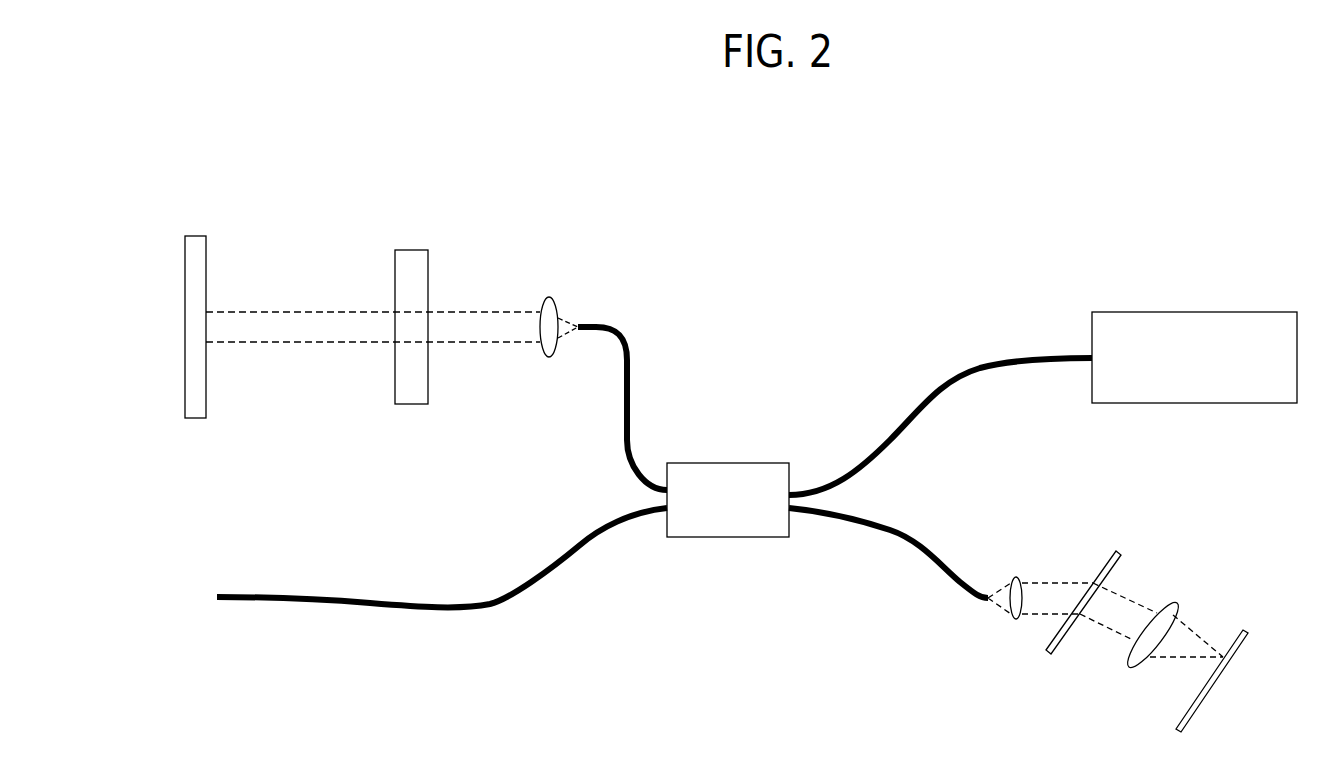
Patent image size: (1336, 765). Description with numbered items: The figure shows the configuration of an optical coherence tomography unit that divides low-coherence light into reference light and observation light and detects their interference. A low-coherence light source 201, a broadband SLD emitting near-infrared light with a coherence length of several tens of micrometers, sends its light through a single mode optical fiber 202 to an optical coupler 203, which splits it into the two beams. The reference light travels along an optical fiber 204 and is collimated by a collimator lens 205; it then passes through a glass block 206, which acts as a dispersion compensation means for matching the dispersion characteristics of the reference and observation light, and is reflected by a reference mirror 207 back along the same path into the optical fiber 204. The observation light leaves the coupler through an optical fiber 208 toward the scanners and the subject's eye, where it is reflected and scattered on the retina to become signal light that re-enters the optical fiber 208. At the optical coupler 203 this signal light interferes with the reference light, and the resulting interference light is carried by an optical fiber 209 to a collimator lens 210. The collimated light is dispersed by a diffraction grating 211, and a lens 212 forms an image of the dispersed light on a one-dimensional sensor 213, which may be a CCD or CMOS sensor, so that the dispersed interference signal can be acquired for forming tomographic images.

The low-coherence light source 201 is at (1197, 312).
The optical fiber 202 is at (980, 370).
The optical coupler 203 is at (731, 463).
The optical fiber 204 is at (632, 362).
The collimator lens 205 is at (548, 297).
The glass block 206 is at (408, 250).
The reference mirror 207 is at (192, 236).
The optical fiber 208 is at (374, 597).
The optical fiber 209 is at (858, 523).
The collimator lens 210 is at (1017, 623).
The scanning mirror 211 is at (1049, 656).
The lens 212 is at (1131, 670).
The one-dimensional sensor 213 is at (1205, 700).